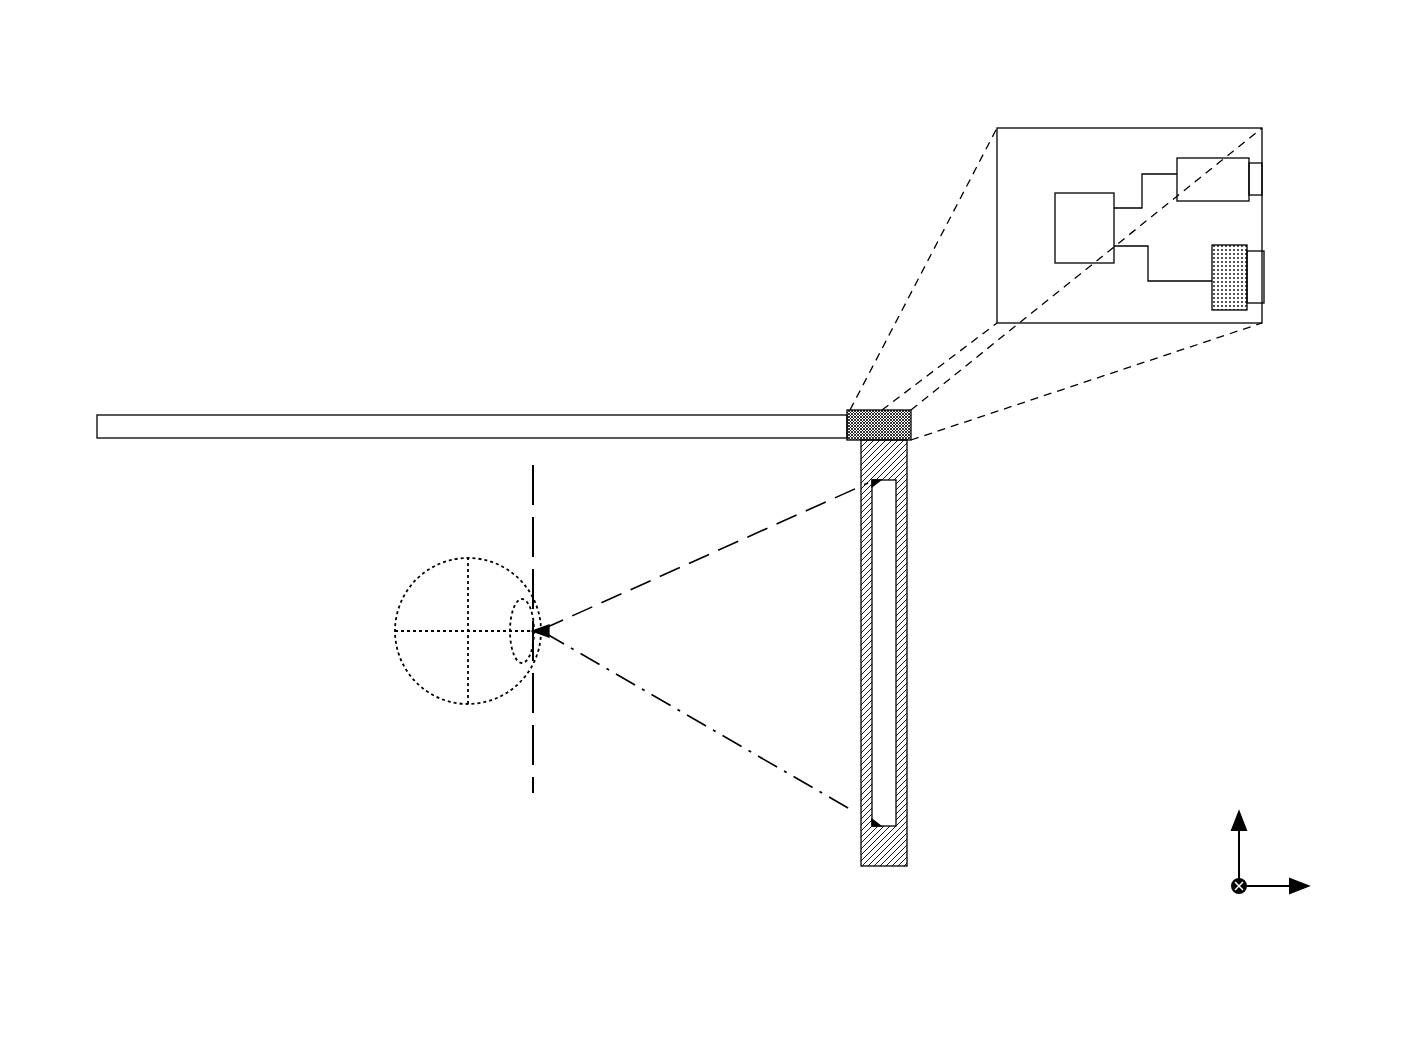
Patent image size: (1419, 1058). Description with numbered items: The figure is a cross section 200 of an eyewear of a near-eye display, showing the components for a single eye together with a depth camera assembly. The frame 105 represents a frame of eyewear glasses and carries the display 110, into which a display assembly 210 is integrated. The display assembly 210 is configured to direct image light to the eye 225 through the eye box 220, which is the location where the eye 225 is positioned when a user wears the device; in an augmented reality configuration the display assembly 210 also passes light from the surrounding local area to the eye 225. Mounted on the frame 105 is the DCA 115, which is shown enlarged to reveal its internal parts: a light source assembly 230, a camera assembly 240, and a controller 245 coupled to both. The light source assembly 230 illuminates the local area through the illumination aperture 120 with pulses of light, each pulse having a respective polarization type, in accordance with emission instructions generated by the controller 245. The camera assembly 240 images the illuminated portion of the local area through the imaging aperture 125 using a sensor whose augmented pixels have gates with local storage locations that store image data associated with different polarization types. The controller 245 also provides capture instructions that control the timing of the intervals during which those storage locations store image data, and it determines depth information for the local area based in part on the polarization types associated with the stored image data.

The cross section 200 is at (183, 87).
The frame 105 is at (313, 413).
The depth camera assembly 115 is at (850, 412).
The controller 245 is at (1055, 228).
The light source assembly 230 is at (1176, 158).
The illumination aperture 120 is at (1268, 163).
The camera assembly 240 is at (1223, 311).
The imaging aperture 125 is at (1264, 283).
The display assembly 210 is at (969, 653).
The display 110 is at (907, 765).
The eye 225 is at (432, 568).
The eye box 220 is at (530, 720).